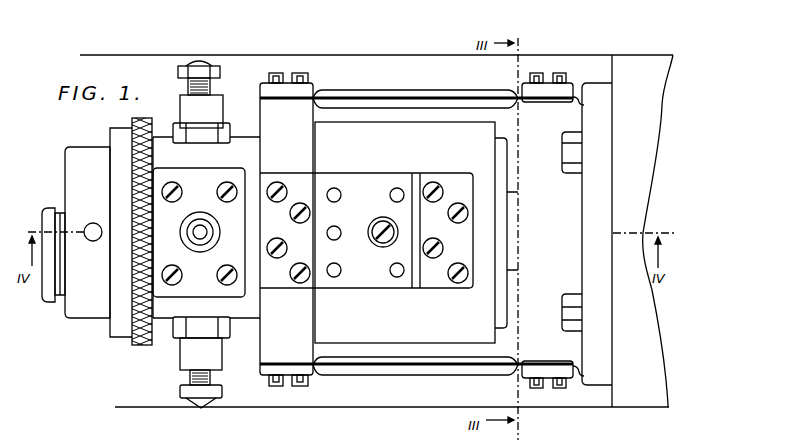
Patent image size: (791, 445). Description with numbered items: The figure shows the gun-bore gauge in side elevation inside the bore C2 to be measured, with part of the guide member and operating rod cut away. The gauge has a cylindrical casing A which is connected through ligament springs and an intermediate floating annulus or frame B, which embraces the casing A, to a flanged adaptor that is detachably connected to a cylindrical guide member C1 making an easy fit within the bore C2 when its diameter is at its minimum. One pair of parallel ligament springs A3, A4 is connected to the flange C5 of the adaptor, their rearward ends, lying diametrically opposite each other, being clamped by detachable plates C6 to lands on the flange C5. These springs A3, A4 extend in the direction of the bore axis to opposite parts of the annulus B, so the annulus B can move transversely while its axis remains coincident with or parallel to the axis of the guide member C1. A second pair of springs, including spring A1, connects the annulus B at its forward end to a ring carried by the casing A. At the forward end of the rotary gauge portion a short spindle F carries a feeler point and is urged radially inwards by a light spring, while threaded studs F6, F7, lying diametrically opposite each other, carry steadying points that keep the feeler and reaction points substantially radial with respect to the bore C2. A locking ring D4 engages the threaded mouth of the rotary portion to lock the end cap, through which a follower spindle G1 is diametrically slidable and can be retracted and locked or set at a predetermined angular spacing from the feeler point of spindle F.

The cylindrical casing A is at (402, 127).
The ligament spring A1 is at (336, 282).
The ligament spring A3 is at (458, 93).
The ligament spring A4 is at (395, 372).
The intermediate floating annulus B is at (273, 103).
The cylindrical guide member C1 is at (642, 231).
The bore C2 is at (654, 57).
The flange C5 is at (535, 343).
The detachable plates C6 is at (568, 86).
The locking ring D4 is at (145, 120).
The spindle F is at (198, 238).
The screwthreaded stud F6 is at (201, 60).
The screwthreaded stud F7 is at (192, 392).
The follower spindle G1 is at (87, 226).